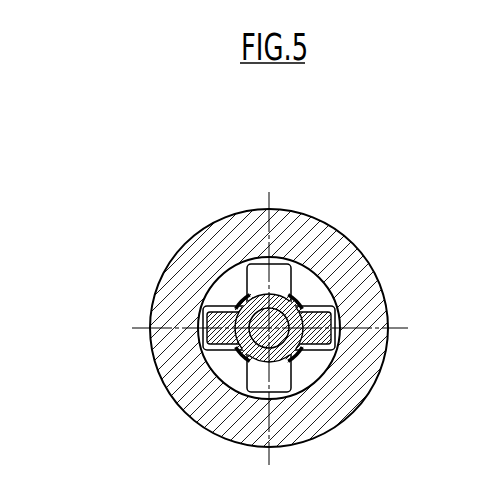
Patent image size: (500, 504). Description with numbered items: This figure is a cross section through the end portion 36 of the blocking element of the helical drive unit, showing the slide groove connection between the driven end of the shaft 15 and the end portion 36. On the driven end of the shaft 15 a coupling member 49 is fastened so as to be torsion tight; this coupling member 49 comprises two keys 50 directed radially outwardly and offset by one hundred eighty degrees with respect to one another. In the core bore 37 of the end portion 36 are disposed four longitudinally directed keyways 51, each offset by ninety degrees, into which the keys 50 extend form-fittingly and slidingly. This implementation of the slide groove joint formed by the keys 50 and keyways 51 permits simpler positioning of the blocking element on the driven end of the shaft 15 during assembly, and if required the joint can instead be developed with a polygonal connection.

The shaft 15 is at (335, 297).
The end portion 36 is at (178, 362).
The core bore 37 is at (230, 286).
The coupling member 49 is at (303, 300).
The keys 50 is at (333, 334).
The keyways 51 is at (277, 377).